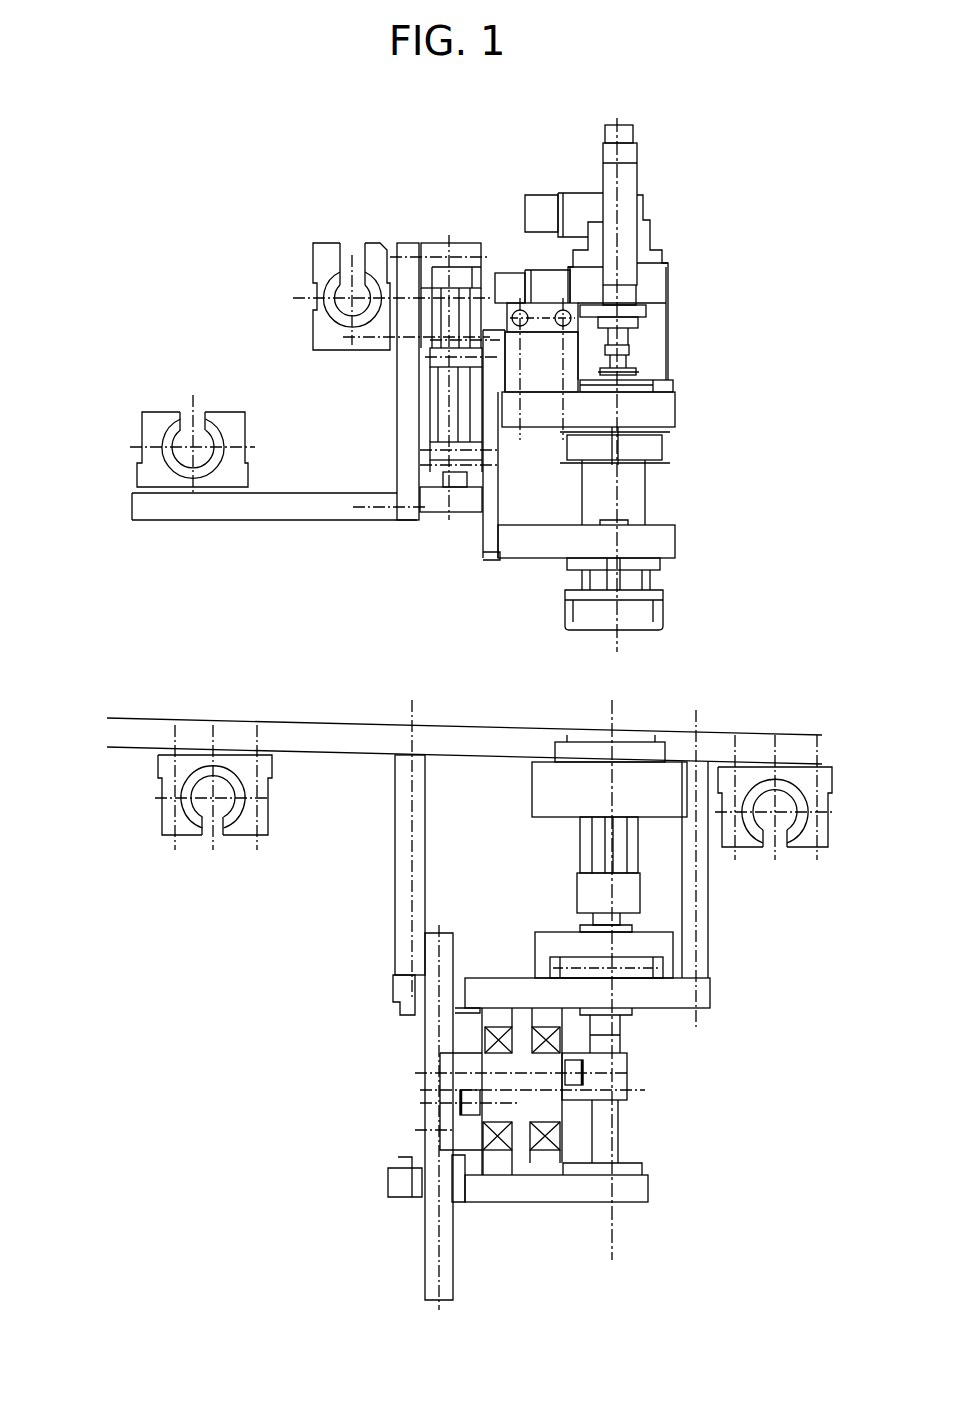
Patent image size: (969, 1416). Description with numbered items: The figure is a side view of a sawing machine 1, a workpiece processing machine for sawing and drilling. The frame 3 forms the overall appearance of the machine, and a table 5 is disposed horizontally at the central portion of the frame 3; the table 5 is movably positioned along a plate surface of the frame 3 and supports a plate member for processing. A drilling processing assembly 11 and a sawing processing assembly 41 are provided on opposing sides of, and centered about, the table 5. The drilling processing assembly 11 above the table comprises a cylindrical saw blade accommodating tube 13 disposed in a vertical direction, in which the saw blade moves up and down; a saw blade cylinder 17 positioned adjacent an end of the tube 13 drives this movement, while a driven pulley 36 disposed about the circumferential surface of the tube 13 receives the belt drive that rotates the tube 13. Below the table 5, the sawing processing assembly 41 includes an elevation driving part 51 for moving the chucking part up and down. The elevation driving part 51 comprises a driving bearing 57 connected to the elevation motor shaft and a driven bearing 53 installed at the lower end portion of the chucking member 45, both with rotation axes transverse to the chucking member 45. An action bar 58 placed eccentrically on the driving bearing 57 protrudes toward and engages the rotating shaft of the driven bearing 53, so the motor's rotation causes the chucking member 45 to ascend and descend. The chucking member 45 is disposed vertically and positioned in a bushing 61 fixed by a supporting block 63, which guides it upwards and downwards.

The sawing machine 1 is at (140, 246).
The frame 3 is at (403, 402).
The table 5 is at (143, 720).
The drilling processing assembly 11 is at (740, 537).
The saw blade accommodating tube 13 is at (640, 493).
The saw blade cylinder 17 is at (631, 180).
The driven pulley 36 is at (657, 447).
The sawing processing assembly 41 is at (268, 1033).
The chucking member 45 is at (590, 1150).
The elevation driving part 51 is at (312, 1065).
The driven bearing 53 is at (590, 1085).
The driving bearing 57 is at (493, 1075).
The action bar 58 is at (565, 1072).
The bushing 61 is at (592, 887).
The supporting block 63 is at (550, 420).